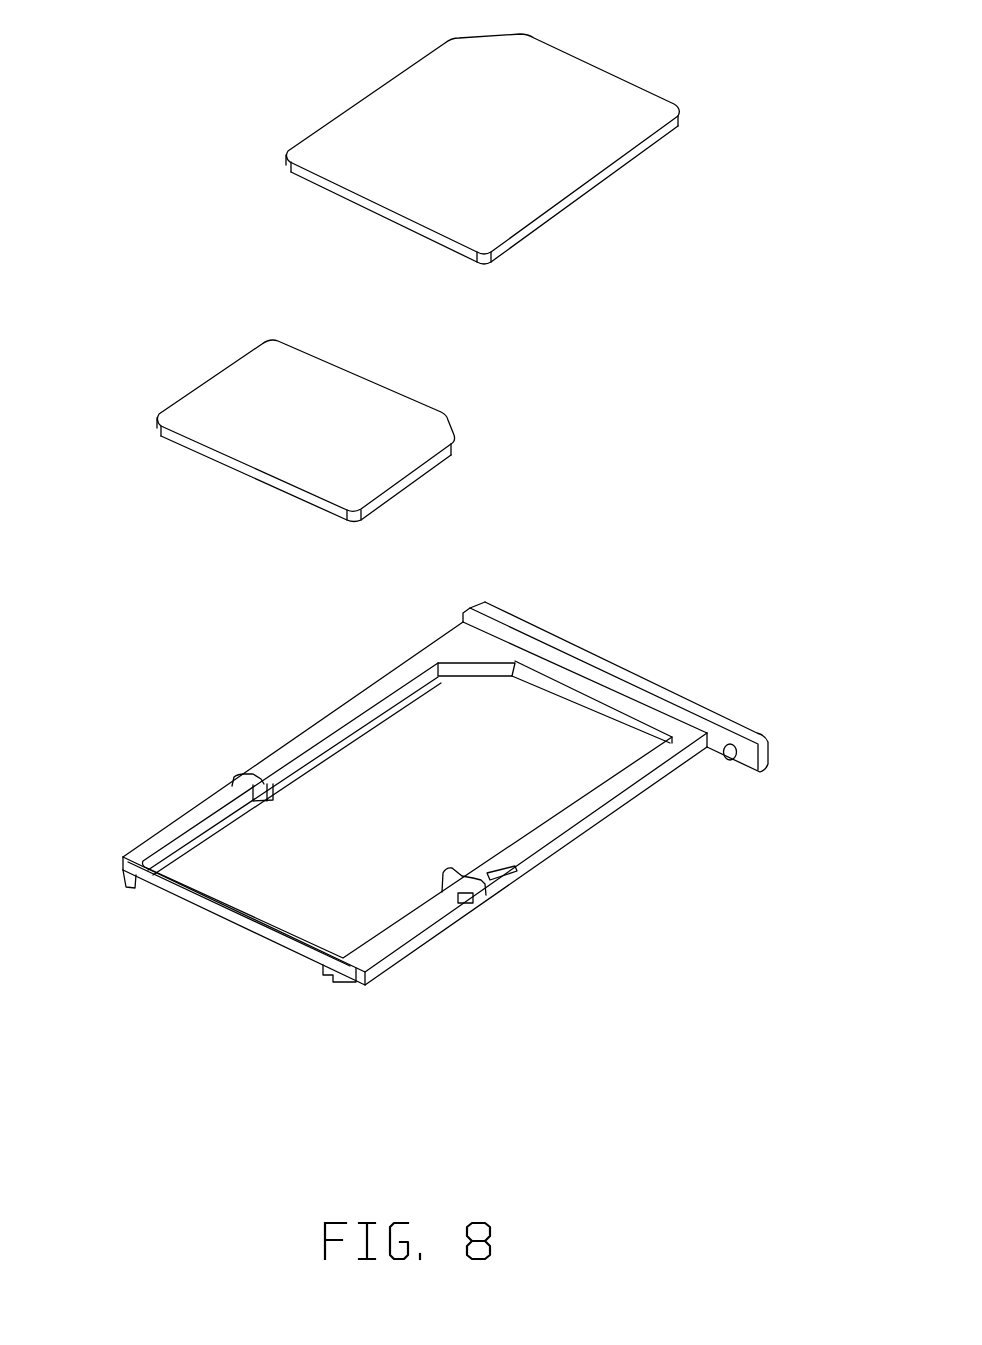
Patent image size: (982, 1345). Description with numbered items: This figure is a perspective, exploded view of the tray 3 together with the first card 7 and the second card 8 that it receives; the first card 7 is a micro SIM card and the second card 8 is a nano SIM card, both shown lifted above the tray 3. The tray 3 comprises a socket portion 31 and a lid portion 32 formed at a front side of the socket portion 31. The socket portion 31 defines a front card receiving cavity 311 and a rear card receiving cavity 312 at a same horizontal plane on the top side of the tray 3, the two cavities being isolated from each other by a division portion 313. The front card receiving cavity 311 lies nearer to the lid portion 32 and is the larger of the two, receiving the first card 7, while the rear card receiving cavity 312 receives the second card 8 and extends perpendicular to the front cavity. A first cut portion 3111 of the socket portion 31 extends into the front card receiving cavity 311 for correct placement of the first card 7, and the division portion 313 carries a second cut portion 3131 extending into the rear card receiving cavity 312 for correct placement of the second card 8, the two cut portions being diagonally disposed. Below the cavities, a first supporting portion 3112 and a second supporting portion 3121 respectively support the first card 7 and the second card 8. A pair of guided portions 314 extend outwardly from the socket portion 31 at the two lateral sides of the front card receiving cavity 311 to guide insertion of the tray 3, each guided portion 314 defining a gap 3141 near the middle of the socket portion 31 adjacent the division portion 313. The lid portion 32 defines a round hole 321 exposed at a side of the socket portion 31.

The first card 7 is at (362, 79).
The second card 8 is at (186, 366).
The tray 3 is at (298, 710).
The socket portion 31 is at (360, 710).
The front card receiving cavity 311 is at (550, 782).
The first cut portion 3111 is at (478, 657).
The first supporting portion 3112 is at (398, 713).
The rear card receiving cavity 312 is at (352, 912).
The second supporting portion 3121 is at (163, 866).
The division portion 313 is at (267, 783).
The second cut portion 3131 is at (470, 897).
The guided portion 314 is at (625, 782).
The gap 3141 is at (505, 880).
The lid portion 32 is at (607, 670).
The round hole 321 is at (733, 758).